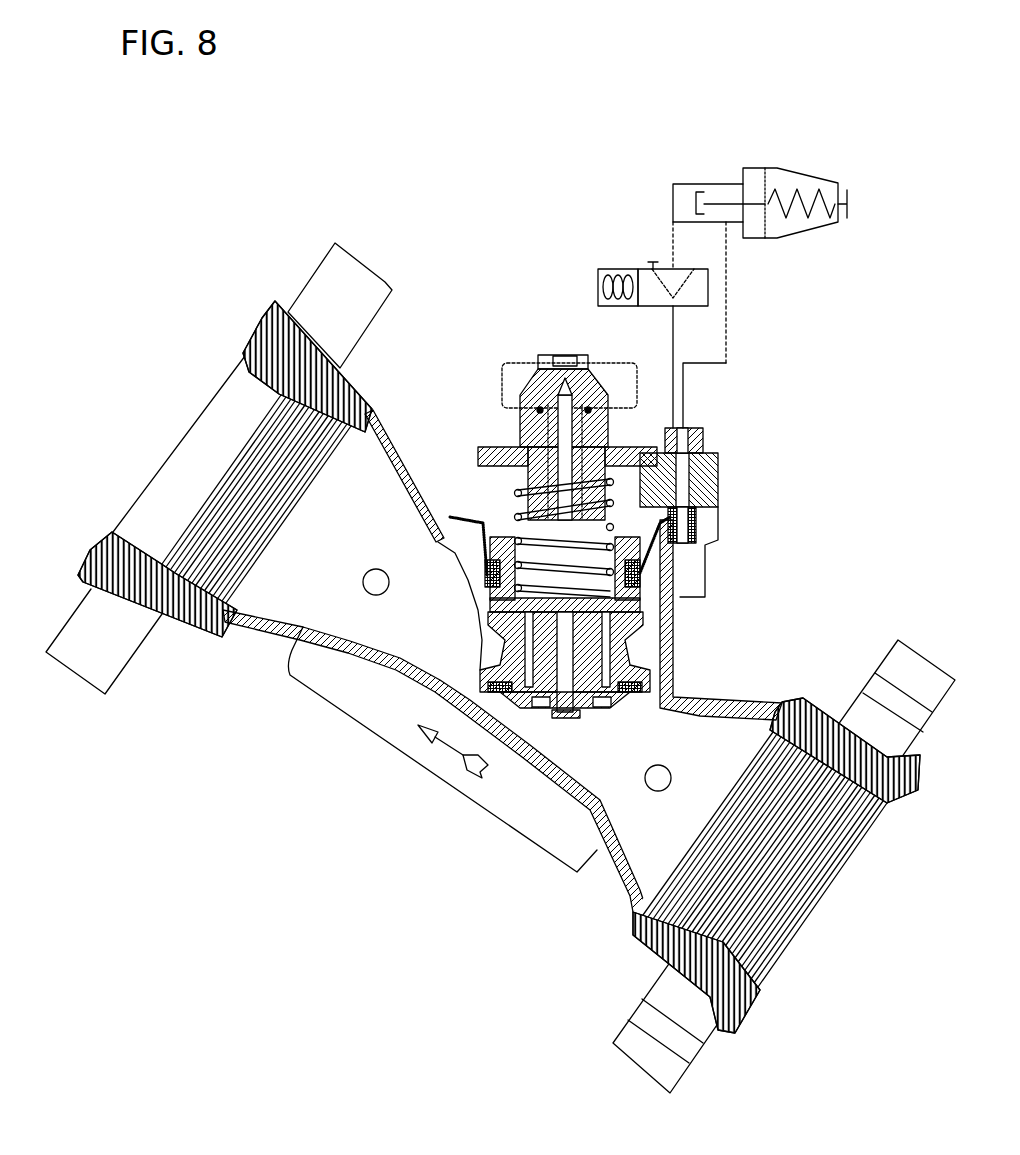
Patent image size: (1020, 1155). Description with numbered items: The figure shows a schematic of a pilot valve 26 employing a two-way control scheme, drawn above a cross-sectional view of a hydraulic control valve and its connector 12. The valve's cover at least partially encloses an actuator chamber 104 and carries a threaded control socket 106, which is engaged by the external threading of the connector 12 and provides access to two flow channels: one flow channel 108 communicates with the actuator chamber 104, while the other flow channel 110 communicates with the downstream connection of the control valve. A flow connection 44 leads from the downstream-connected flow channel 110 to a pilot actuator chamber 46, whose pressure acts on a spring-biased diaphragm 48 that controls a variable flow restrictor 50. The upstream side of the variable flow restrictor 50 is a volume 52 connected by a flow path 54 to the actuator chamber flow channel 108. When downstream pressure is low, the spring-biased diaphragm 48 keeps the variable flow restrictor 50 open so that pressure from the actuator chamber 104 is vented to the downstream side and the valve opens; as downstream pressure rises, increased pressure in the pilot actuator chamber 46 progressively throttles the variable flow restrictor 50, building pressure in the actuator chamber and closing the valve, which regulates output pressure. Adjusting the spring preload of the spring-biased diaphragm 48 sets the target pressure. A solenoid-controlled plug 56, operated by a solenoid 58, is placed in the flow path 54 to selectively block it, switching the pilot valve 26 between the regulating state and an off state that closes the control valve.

The pilot valve 26 is at (693, 238).
The variable flow restrictor 50 is at (704, 188).
The pilot actuator chamber 46 is at (735, 188).
The spring-biased diaphragm 48 is at (765, 186).
The volume 52 is at (680, 198).
The solenoid-controlled plug 56 is at (665, 270).
The solenoid 58 is at (598, 285).
The flow path 54 is at (673, 350).
The flow connection 44 is at (683, 400).
The connector 12 is at (705, 445).
The threaded control socket 106 is at (713, 463).
The flow channel 110 is at (703, 498).
The actuator chamber 104 is at (500, 480).
The flow channel 108 is at (652, 475).